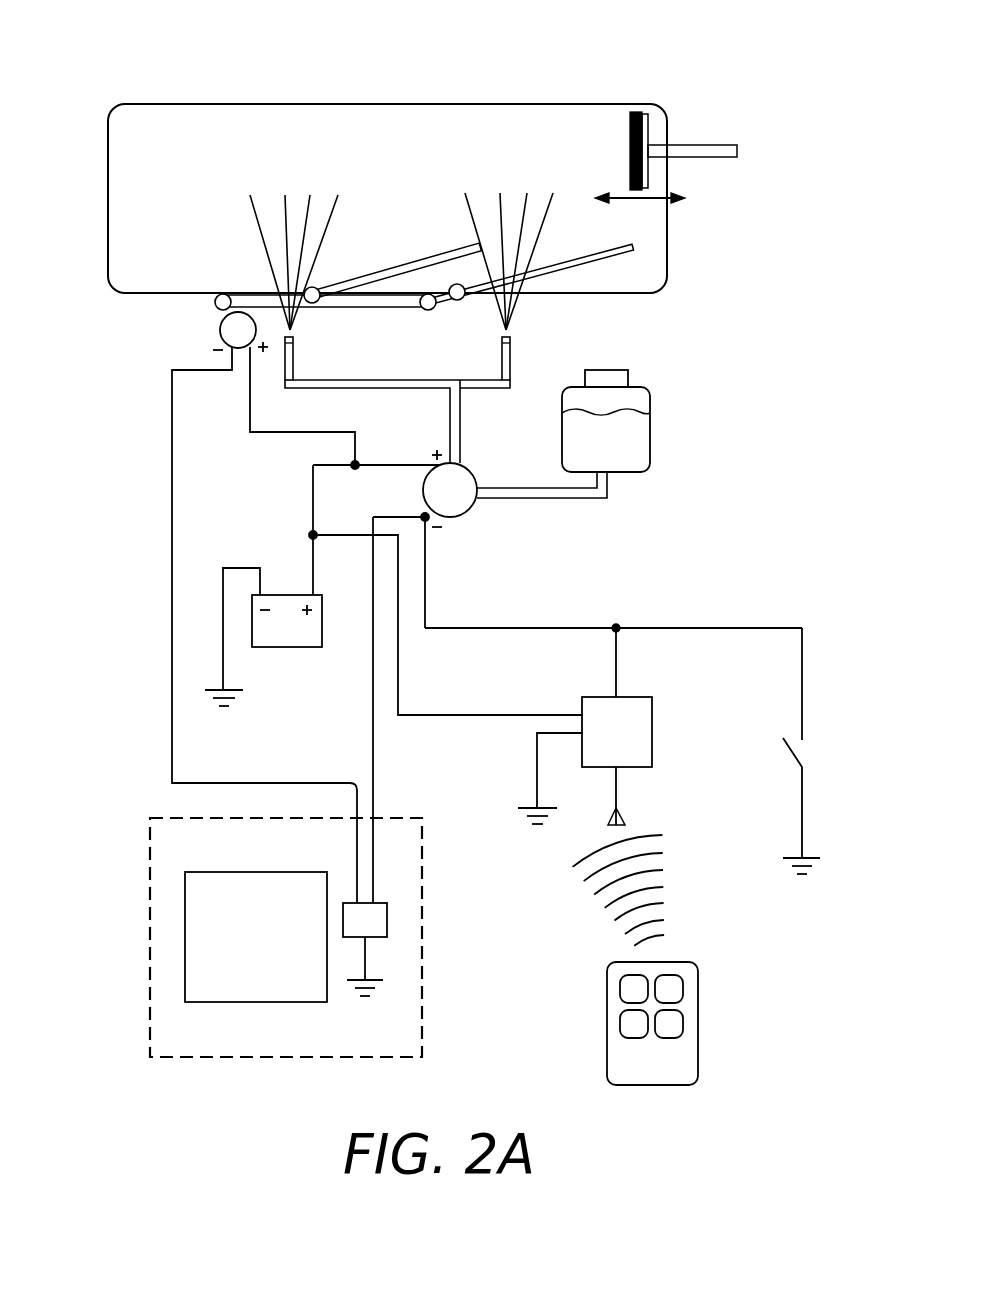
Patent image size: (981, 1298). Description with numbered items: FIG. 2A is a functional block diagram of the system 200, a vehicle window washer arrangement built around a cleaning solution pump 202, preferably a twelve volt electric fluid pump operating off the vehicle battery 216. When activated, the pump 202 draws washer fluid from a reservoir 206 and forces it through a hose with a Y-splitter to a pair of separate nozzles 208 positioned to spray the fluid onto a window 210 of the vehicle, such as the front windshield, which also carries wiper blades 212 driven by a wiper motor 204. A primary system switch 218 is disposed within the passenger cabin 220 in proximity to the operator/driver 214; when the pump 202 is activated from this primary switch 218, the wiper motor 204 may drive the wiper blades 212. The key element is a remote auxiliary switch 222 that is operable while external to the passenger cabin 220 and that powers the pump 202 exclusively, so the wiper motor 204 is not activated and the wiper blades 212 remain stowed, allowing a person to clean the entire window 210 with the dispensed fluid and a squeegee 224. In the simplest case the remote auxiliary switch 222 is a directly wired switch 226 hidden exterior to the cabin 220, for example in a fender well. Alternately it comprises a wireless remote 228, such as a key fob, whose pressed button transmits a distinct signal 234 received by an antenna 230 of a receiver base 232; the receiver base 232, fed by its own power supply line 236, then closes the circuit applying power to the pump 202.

The system 200 is at (698, 52).
The cleaning solution pump 202 is at (458, 518).
The wiper motor 204 is at (220, 333).
The reservoir 206 is at (623, 473).
The nozzles 208 is at (540, 338).
The window 210 is at (240, 210).
The wiper blades 212 is at (645, 245).
The operator/driver 214 is at (185, 937).
The vehicle battery 216 is at (278, 648).
The primary system switch 218 is at (387, 918).
The passenger cabin 220 is at (393, 820).
The remote auxiliary switch 222 is at (725, 595).
The squeegee 224 is at (685, 147).
The directly wired switch 226 is at (815, 745).
The wireless remote 228 is at (672, 962).
The antenna 230 is at (618, 785).
The receiver base 232 is at (633, 697).
The signal 234 is at (600, 918).
The power supply line 236 is at (455, 715).